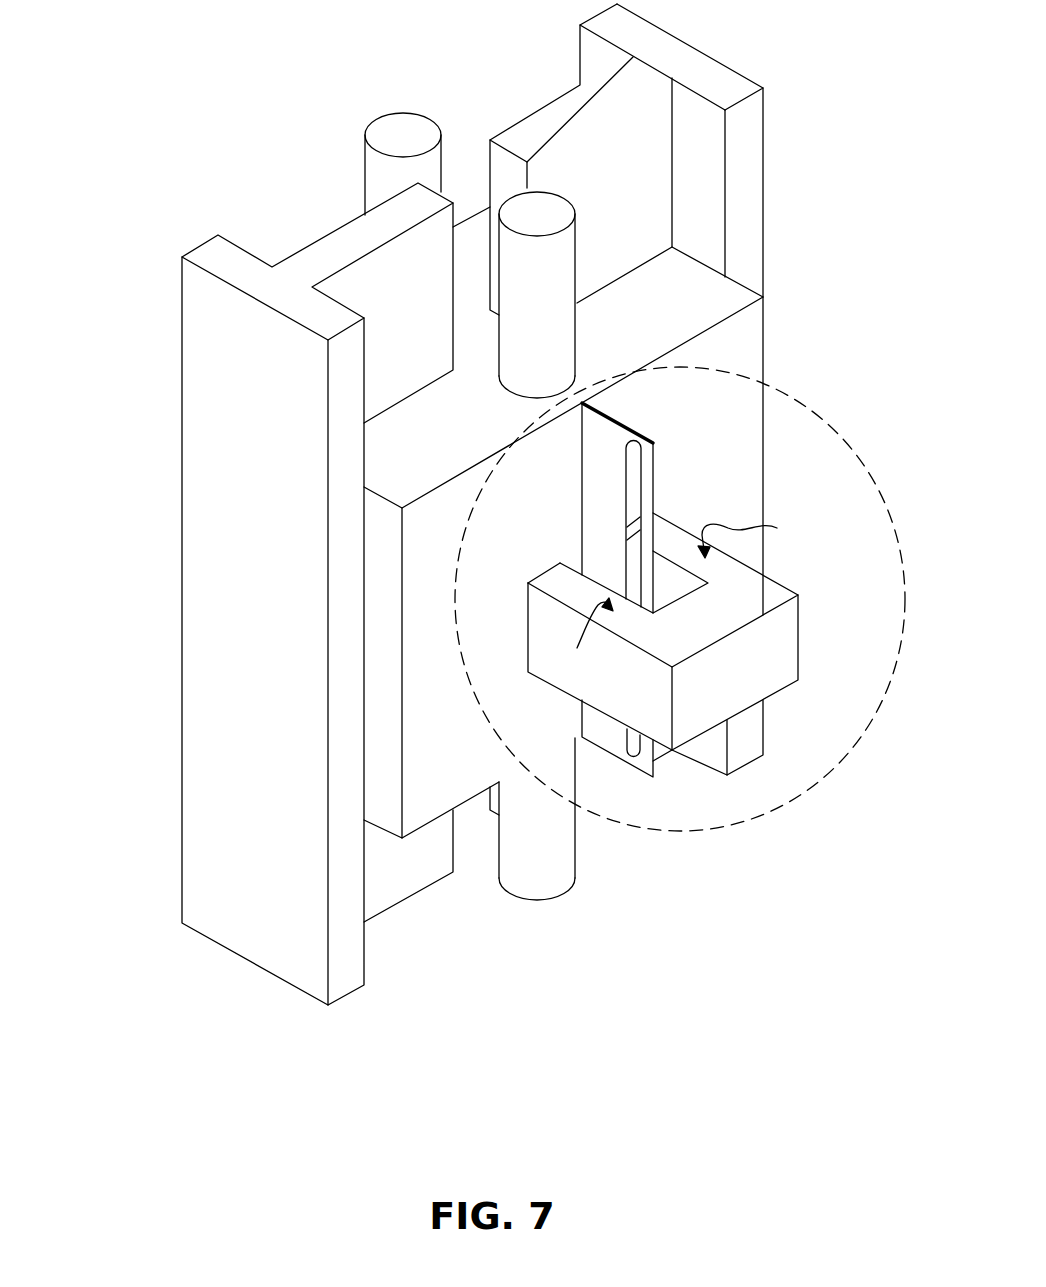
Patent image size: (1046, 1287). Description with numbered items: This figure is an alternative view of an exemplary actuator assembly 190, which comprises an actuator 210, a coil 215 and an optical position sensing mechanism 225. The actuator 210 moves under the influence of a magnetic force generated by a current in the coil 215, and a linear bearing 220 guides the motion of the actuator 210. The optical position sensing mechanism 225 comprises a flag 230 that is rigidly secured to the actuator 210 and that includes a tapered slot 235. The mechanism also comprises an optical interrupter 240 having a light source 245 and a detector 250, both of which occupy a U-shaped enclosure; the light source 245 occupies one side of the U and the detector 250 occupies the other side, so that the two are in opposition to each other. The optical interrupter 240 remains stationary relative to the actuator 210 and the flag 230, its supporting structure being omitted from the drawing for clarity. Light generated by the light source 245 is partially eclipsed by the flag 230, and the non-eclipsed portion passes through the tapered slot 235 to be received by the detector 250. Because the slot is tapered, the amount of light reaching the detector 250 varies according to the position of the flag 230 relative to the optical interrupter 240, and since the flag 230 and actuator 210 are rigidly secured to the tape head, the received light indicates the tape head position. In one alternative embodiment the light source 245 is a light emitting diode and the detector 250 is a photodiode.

The actuator assembly 190 is at (160, 303).
The actuator 210 is at (747, 342).
The coil 215 is at (210, 562).
The linear bearing 220 is at (388, 136).
The optical position sensing mechanism 225 is at (838, 433).
The flag 230 is at (629, 590).
The tapered slot 235 is at (630, 492).
The optical interrupter 240 is at (795, 627).
The light source 245 is at (766, 535).
The detector 250 is at (569, 634).